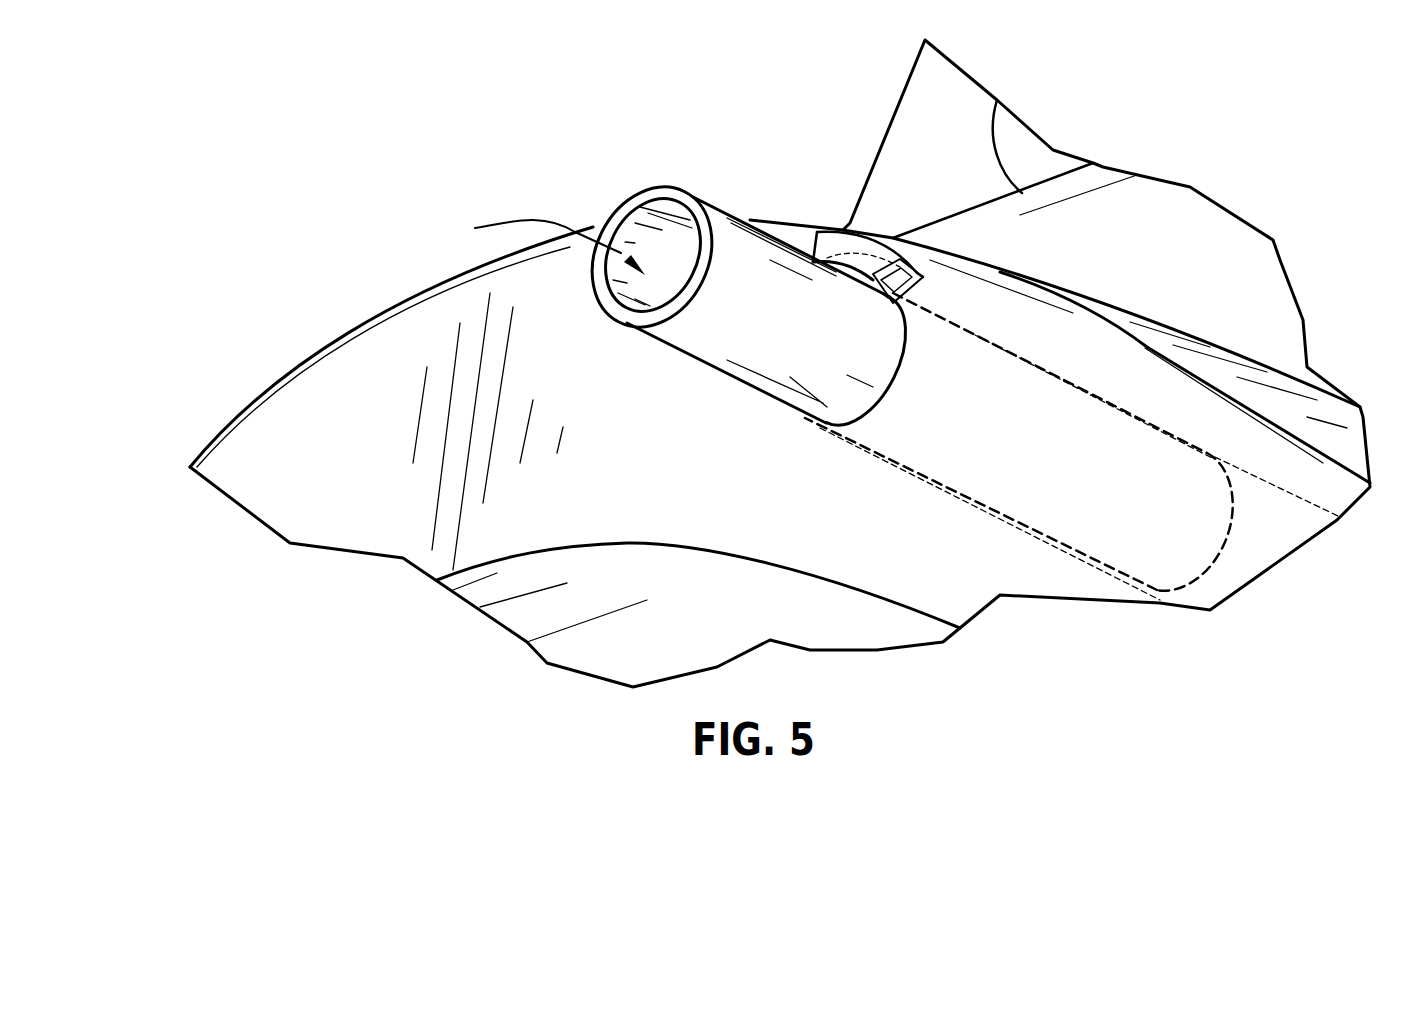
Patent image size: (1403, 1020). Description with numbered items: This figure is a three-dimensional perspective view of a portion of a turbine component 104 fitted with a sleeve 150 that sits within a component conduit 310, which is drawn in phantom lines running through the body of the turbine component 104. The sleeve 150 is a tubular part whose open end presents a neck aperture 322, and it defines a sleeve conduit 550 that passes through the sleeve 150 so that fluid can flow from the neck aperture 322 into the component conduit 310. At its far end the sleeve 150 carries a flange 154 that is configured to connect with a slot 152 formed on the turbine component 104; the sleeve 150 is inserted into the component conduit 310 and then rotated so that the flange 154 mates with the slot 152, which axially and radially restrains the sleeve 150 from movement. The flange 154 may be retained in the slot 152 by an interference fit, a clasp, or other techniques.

The turbine component 104 is at (412, 91).
The sleeve 150 is at (720, 272).
The slot 152 is at (845, 238).
The flange 154 is at (863, 280).
The component conduit 310 is at (918, 495).
The neck aperture 322 is at (665, 200).
The sleeve conduit 550 is at (536, 244).